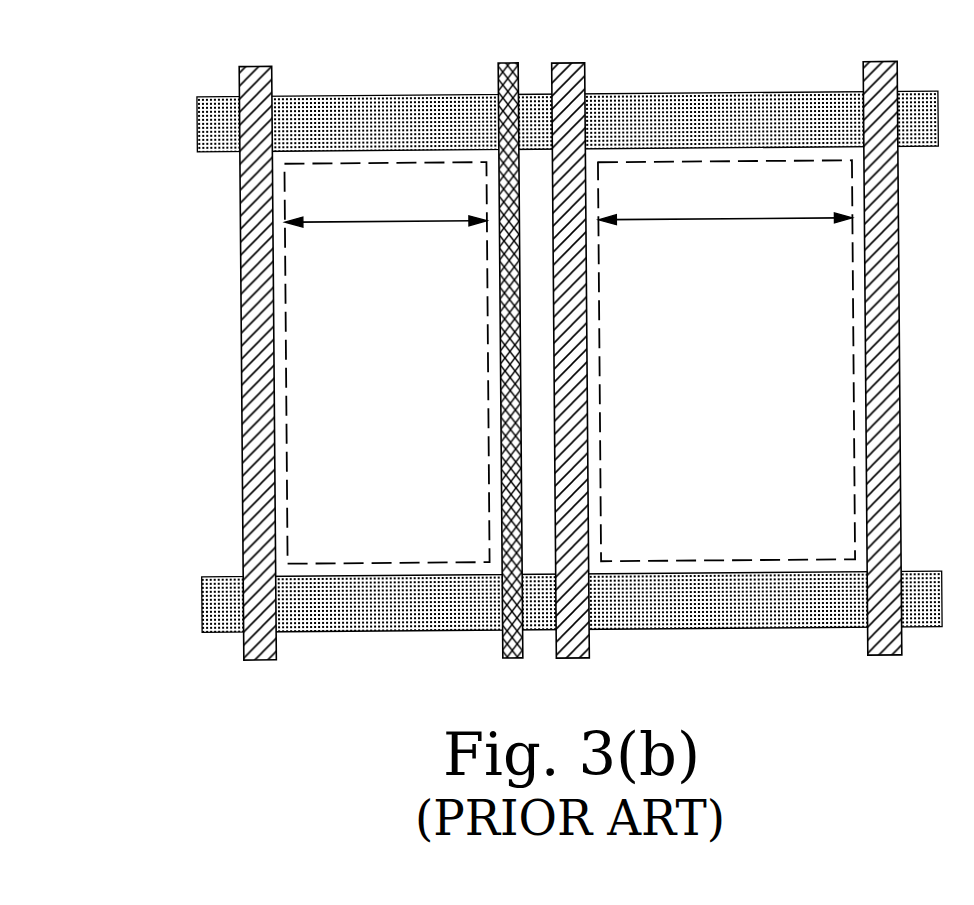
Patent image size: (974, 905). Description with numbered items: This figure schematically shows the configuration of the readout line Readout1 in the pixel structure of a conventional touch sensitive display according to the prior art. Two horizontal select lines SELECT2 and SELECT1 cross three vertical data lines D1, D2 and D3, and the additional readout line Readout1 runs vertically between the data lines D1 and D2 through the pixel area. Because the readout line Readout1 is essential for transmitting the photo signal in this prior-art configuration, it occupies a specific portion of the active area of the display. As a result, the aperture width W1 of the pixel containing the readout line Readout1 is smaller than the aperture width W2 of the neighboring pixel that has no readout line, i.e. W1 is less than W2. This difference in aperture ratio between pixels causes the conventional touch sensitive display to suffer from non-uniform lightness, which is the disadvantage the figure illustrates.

The second select line SELECT2 is at (507, 121).
The first select line SELECT1 is at (512, 601).
The readout line Readout1 is at (485, 339).
The first data line D1 is at (257, 386).
The second data line D2 is at (571, 384).
The third data line D3 is at (882, 381).
The aperture width of pixel with readout line W1 is at (386, 363).
The aperture width of other pixel W2 is at (726, 360).